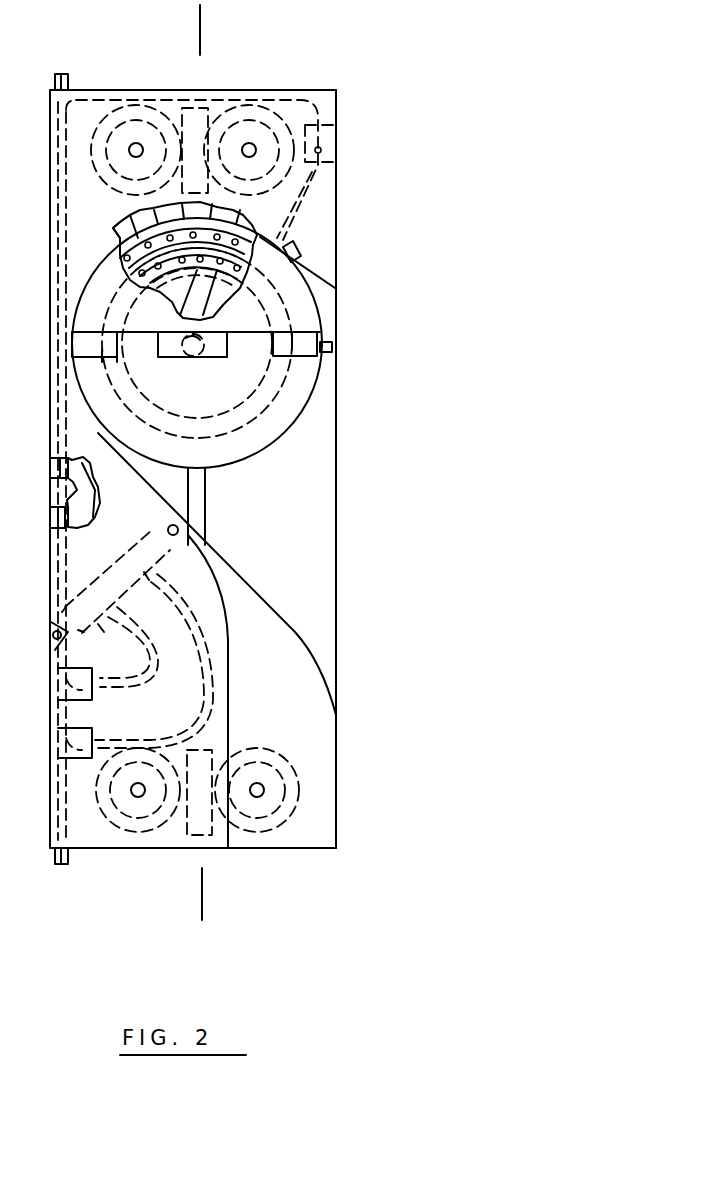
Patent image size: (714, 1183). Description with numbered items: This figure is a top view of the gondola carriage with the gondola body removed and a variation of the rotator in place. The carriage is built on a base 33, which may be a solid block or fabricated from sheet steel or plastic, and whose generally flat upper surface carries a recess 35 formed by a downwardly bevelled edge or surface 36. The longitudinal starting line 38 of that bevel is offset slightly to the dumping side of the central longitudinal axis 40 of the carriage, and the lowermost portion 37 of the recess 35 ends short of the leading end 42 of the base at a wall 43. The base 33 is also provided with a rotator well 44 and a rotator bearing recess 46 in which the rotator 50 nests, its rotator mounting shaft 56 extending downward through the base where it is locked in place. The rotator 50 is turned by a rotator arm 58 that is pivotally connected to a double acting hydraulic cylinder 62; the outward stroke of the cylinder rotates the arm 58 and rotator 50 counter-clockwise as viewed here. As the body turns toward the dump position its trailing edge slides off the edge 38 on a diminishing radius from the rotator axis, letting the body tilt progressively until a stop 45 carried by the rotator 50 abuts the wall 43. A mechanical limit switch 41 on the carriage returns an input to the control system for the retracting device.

The base 33 is at (338, 808).
The recess 35 is at (368, 598).
The downwardly bevelled edge or surface 36 is at (300, 698).
The lowermost portion of recess 37 is at (298, 544).
The longitudinal starting line 38 is at (230, 706).
The central longitudinal axis 40 is at (220, 900).
The mechanical limit switch 41 is at (297, 268).
The leading end 42 is at (326, 104).
The wall 43 is at (288, 243).
The rotator well 44 is at (118, 238).
The stop 45 is at (334, 350).
The rotator bearing recess 46 is at (185, 270).
The rotator 50 is at (277, 418).
The rotator mounting shaft 56 is at (195, 357).
The rotator arm 58 is at (207, 495).
The double acting hydraulic cylinder 62 is at (112, 560).